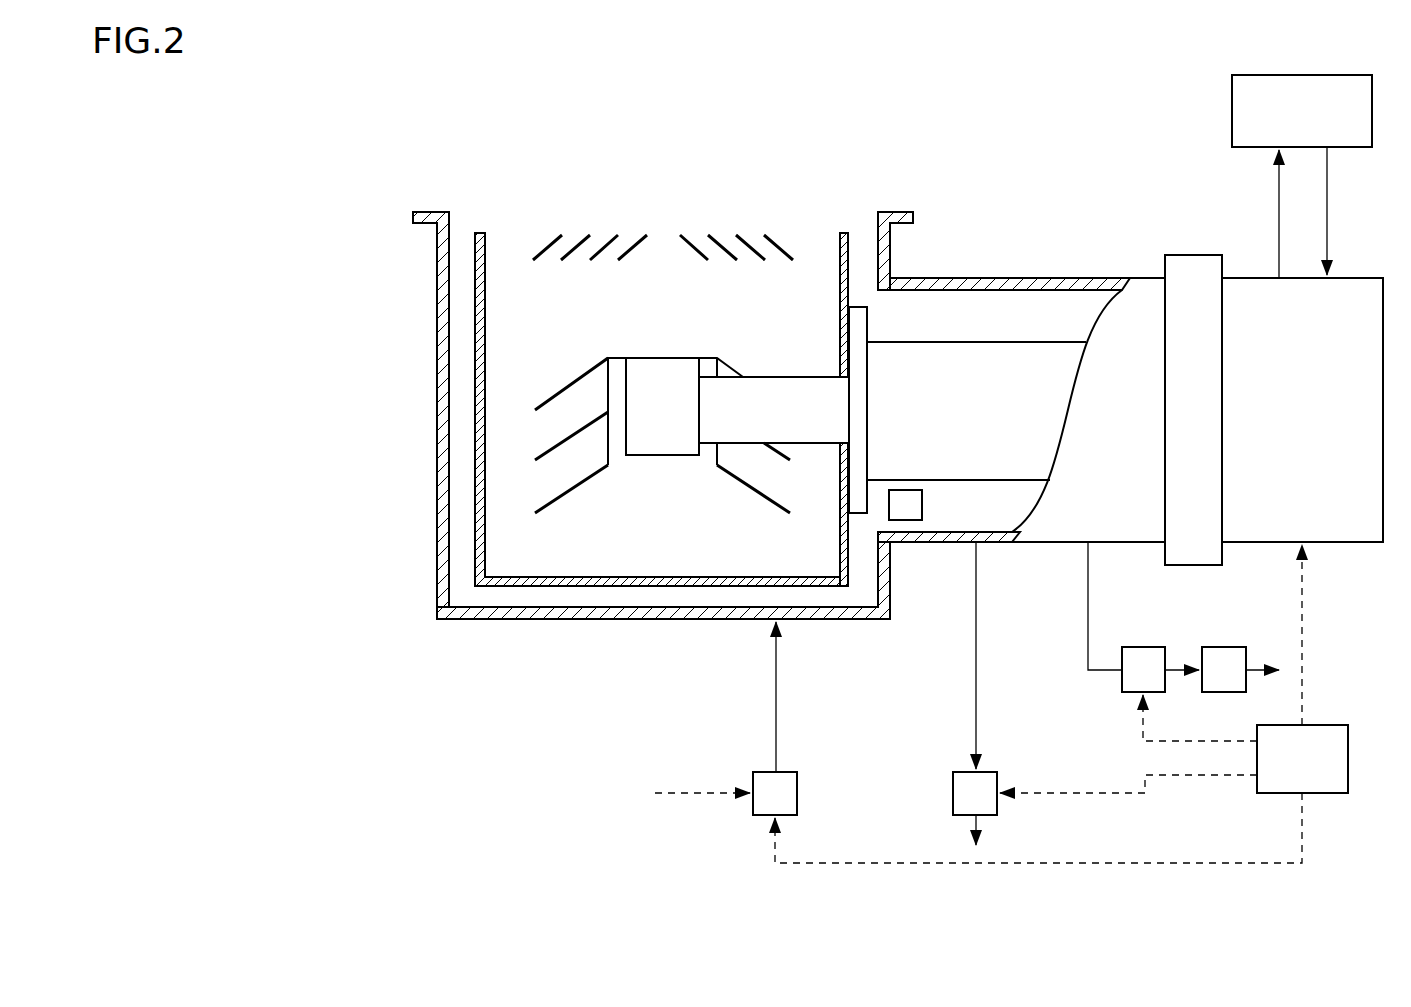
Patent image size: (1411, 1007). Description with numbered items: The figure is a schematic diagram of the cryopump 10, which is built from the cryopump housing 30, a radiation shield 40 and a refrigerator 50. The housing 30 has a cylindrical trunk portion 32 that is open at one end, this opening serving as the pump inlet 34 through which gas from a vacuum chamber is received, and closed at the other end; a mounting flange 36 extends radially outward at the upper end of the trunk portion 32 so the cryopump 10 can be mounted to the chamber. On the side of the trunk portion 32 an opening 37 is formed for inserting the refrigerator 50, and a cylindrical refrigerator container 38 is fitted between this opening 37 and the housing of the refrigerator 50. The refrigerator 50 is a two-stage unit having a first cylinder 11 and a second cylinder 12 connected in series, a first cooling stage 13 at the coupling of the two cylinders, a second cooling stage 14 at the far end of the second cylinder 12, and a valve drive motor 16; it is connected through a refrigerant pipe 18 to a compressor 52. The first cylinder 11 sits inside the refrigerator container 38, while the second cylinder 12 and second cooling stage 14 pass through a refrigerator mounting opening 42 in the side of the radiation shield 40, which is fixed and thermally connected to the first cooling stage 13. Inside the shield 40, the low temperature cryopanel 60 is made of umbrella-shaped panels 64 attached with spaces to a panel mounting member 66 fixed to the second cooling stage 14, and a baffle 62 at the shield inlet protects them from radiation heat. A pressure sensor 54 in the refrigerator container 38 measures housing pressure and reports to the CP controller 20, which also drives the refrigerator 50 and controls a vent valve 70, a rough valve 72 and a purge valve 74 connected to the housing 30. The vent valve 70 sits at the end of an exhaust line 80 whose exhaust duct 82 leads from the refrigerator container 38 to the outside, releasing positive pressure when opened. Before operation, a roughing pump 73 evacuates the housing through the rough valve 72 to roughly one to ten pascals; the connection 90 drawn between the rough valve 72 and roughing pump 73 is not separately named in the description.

The cryopump 10 is at (739, 163).
The first cylinder 11 is at (965, 342).
The second cylinder 12 is at (748, 445).
The first cooling stage 13 is at (857, 307).
The second cooling stage 14 is at (728, 428).
The valve drive motor 16 is at (1257, 278).
The refrigerant pipe 18 is at (1327, 212).
The CP controller 20 is at (1322, 725).
The cryopump housing 30 is at (627, 619).
The trunk portion 32 is at (439, 417).
The pump inlet 34 is at (810, 235).
The mounting flange 36 is at (893, 222).
The opening 37 is at (877, 313).
The refrigerator container 38 is at (1088, 290).
The radiation shield 40 is at (677, 587).
The refrigerator mounting opening 42 is at (845, 442).
The refrigerator 50 is at (1020, 337).
The compressor 52 is at (1232, 110).
The pressure sensor 54 is at (925, 500).
The low temperature cryopanel 60 is at (572, 372).
The baffle 62 is at (548, 243).
The panel 64 is at (572, 488).
The panel mounting member 66 is at (612, 358).
The vent valve 70 is at (1000, 778).
The rough valve 72 is at (1143, 647).
The roughing pump 73 is at (1225, 647).
The purge valve 74 is at (800, 793).
The exhaust line 80 is at (957, 635).
The exhaust duct 82 is at (976, 595).
The connecting pipe 90 is at (1175, 672).